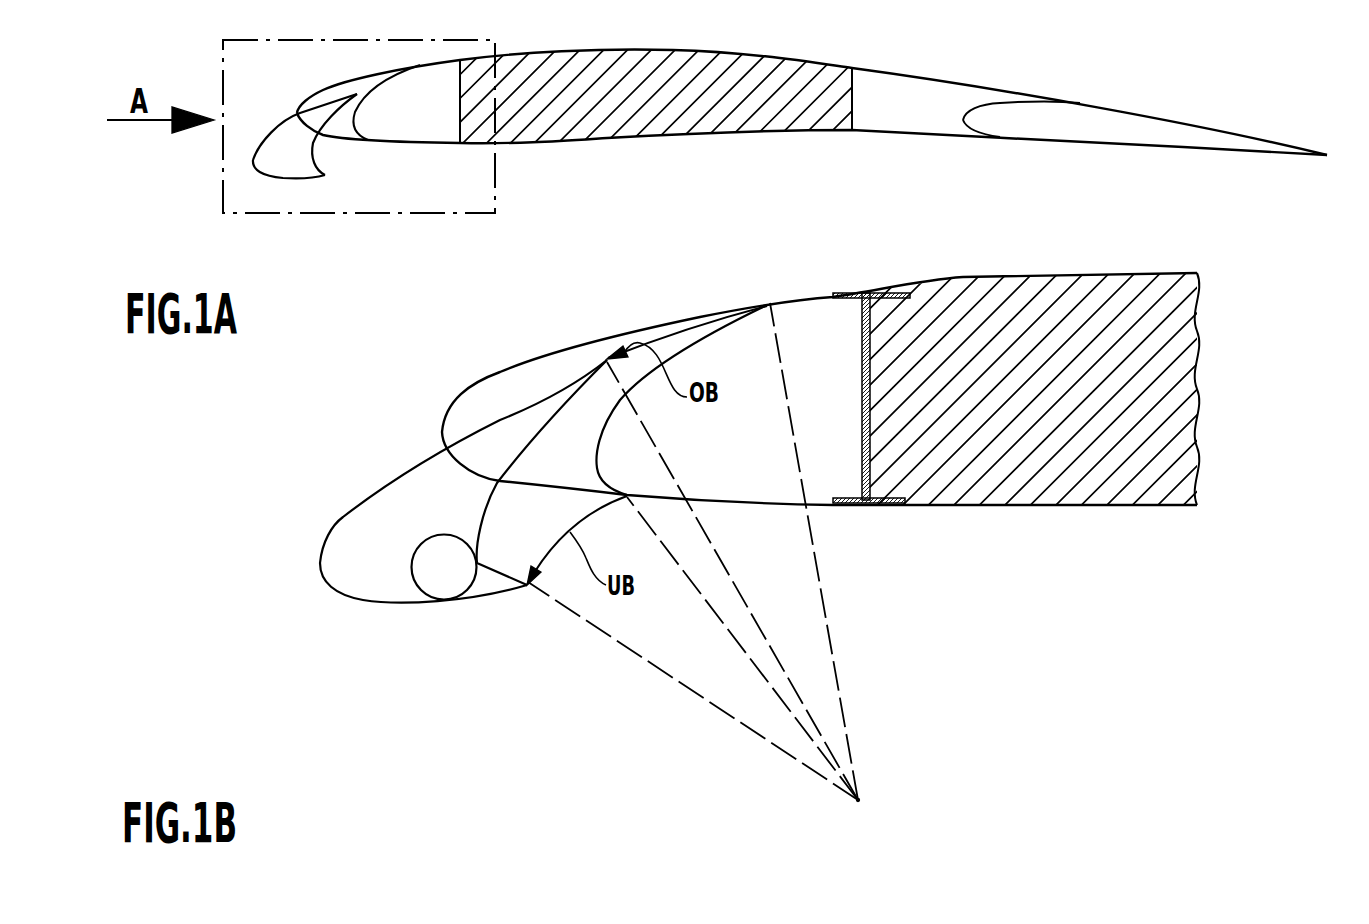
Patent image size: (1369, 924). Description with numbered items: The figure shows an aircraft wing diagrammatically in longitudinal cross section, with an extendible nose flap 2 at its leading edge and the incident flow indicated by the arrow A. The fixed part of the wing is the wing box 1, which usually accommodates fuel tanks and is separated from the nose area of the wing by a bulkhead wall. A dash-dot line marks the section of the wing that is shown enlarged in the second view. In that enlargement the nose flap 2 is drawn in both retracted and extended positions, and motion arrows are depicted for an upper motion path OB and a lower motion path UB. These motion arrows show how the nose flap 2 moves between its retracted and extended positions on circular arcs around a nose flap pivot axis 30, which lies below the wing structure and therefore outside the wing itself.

In FIG. 1A, the wing box 1 is at (647, 88).
In FIG. 1B, the wing box 1 is at (1113, 457).
In FIG. 1A, the nose flap 2 is at (256, 168).
In FIG. 1B, the nose flap 2 is at (350, 573).
In FIG. 1B, the nose flap pivot axis 30 is at (858, 799).